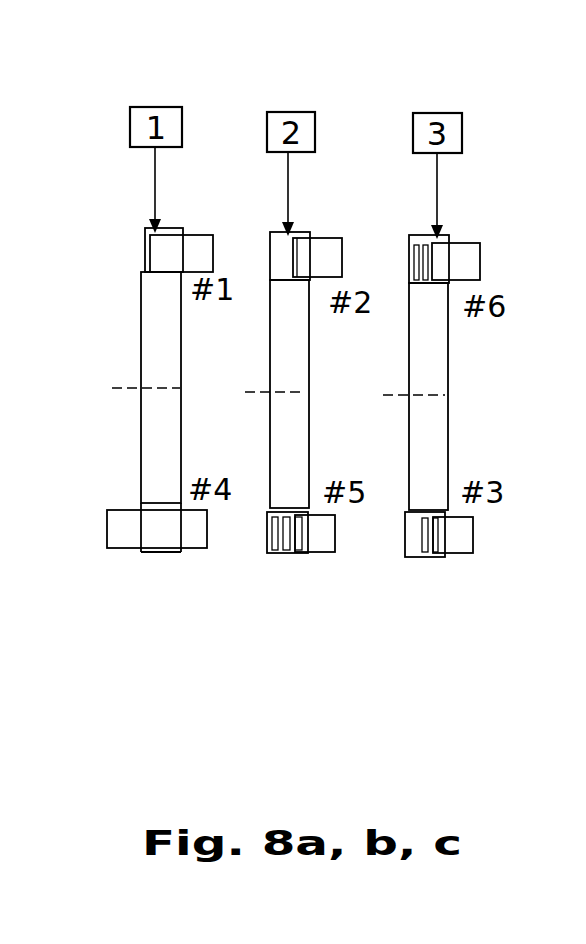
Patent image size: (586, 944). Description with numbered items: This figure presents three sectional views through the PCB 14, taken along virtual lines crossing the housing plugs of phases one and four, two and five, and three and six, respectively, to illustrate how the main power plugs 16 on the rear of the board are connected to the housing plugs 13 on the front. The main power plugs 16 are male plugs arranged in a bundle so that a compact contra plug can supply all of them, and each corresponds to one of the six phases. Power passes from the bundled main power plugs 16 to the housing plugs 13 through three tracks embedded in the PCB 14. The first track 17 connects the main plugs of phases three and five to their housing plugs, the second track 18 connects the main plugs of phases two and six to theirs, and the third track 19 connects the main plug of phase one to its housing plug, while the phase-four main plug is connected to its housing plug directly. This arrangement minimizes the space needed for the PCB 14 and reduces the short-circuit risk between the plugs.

In FIG. 8a, the housing plug 13 is at (195, 248).
In FIG. 8c, the housing plug 13 is at (459, 561).
In FIG. 8a, the PCB 14 is at (147, 312).
In FIG. 8a, the main power plug 16 is at (120, 540).
In FIG. 8b, the first track 17 is at (298, 555).
In FIG. 8c, the first track 17 is at (432, 556).
In FIG. 8b, the second track 18 is at (295, 233).
In FIG. 8c, the second track 18 is at (428, 237).
In FIG. 8a, the third track 19 is at (146, 229).